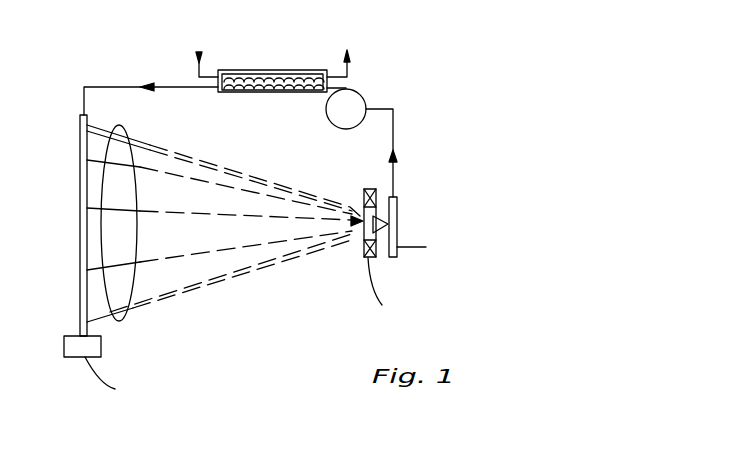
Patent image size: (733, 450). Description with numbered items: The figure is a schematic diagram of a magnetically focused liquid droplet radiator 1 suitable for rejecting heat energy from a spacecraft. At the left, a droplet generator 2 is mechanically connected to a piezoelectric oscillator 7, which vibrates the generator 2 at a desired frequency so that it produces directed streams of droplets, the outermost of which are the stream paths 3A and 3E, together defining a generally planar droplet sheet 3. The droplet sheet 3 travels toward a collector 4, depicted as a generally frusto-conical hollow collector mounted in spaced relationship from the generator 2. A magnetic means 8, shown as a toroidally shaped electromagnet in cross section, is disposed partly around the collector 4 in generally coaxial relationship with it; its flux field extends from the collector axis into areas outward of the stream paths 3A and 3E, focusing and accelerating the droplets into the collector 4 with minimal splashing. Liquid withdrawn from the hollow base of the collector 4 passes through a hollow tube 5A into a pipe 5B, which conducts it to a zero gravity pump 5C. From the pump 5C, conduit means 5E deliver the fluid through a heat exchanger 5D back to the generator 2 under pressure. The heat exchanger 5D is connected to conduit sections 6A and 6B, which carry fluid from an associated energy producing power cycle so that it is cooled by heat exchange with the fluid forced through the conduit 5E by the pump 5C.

The liquid droplet radiator 1 is at (264, 288).
The droplet generator 2 is at (70, 145).
The droplet sheet 3 is at (137, 253).
The droplet stream 3A is at (163, 149).
The droplet stream 3E is at (205, 288).
The collector 4 is at (377, 233).
The hollow tube 5A is at (394, 213).
The pipe 5B is at (394, 137).
The zero gravity pump 5C is at (346, 109).
The heat exchanger 5D is at (220, 94).
The conduit means 5E is at (110, 87).
The conduit section 6A is at (199, 52).
The conduit section 6B is at (345, 56).
The piezoelectric oscillator 7 is at (70, 336).
The magnetic means 8 is at (363, 182).